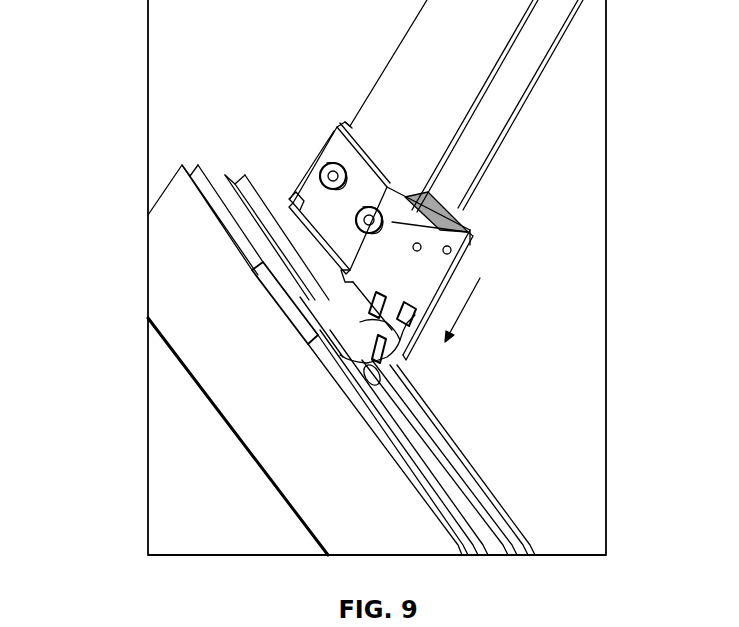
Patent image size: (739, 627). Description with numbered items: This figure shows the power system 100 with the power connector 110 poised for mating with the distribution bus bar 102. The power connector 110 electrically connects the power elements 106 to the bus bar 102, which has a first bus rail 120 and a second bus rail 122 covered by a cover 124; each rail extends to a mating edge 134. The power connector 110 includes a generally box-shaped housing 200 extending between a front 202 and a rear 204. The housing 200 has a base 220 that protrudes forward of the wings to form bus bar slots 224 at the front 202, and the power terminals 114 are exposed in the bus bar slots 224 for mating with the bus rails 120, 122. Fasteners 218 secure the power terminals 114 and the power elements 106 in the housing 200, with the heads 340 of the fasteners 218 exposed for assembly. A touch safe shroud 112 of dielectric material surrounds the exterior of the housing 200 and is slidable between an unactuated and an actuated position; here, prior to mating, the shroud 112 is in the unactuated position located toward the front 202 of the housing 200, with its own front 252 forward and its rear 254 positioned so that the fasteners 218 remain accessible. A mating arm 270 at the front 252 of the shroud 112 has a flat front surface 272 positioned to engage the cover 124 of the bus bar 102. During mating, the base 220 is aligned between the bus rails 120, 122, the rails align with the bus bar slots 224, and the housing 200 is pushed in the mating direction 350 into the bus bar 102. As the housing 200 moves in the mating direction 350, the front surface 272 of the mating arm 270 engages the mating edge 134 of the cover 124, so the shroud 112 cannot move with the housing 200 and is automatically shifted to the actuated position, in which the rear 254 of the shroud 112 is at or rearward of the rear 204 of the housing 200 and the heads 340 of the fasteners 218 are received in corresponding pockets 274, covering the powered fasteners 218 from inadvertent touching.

The power system 100 is at (122, 42).
The distribution bus bar 102 is at (155, 345).
The power elements 106 is at (542, 35).
The power connector 110 is at (311, 136).
The touch safe shroud 112 is at (405, 340).
The power terminals 114 is at (455, 210).
The first bus rail 120 is at (421, 474).
The second bus rail 122 is at (456, 494).
The cover 124 is at (501, 514).
The mating edge 134 is at (441, 427).
The housing 200 is at (330, 136).
The front 202 is at (380, 378).
The rear 204 is at (470, 232).
The fasteners 218 is at (326, 170).
The base 220 is at (345, 385).
The bus bar slots 224 is at (436, 290).
The front 252 is at (363, 352).
The rear 254 is at (293, 202).
The mating arm 270 is at (283, 305).
The front surface 272 is at (283, 322).
The pockets 274 is at (362, 268).
The heads 340 is at (378, 212).
The mating direction 350 is at (462, 312).